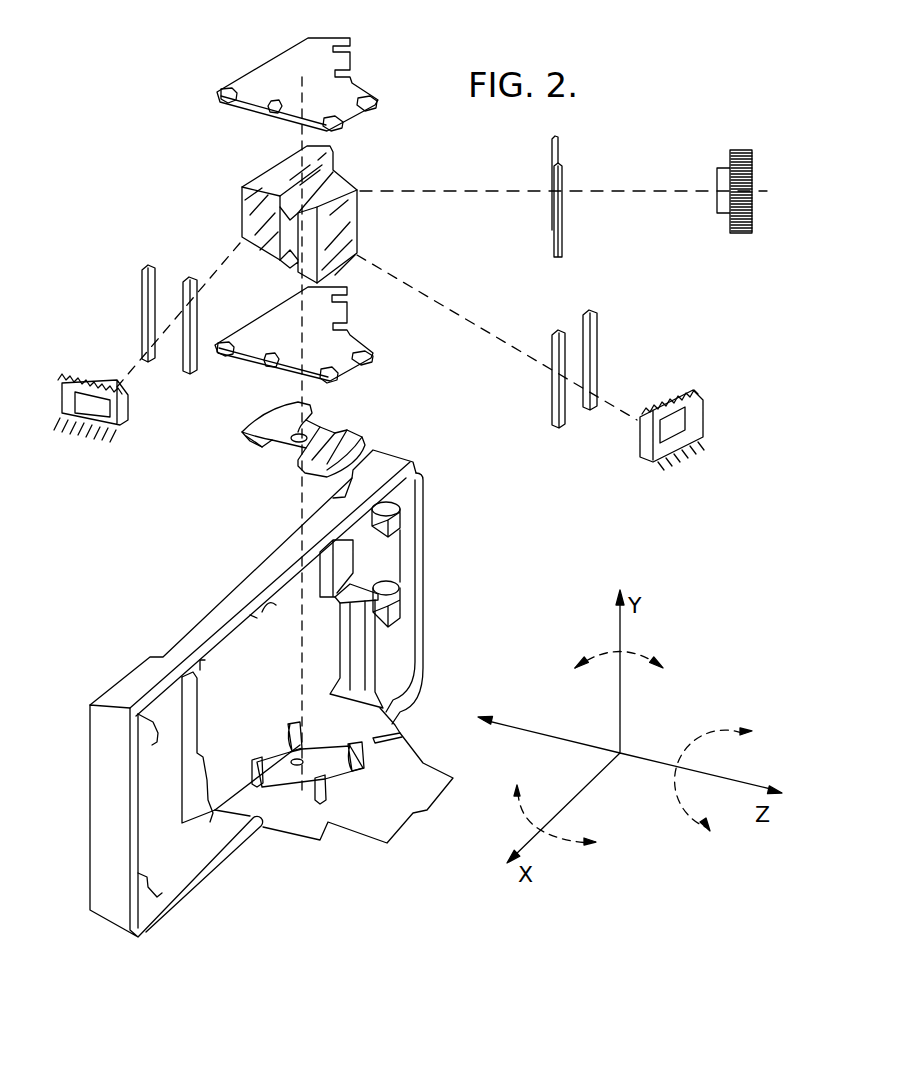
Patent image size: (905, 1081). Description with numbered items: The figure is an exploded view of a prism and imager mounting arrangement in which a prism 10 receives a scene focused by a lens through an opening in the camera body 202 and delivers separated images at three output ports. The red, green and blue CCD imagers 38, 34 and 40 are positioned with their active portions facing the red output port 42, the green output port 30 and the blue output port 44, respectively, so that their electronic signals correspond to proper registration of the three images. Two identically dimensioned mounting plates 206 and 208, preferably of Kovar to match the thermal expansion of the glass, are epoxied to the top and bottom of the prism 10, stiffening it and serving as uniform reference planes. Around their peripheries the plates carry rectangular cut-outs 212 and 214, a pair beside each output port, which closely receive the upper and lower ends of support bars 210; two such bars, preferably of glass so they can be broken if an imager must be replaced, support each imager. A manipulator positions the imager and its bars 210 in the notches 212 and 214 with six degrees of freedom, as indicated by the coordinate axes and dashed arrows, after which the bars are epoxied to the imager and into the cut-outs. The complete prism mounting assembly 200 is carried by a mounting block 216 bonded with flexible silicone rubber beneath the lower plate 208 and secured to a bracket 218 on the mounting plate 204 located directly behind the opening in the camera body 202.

The prism 10 is at (297, 219).
The green output port 30 is at (357, 230).
The green CCD imager 34 is at (647, 440).
The red CCD imager 38 is at (128, 427).
The blue CCD imager 40 is at (720, 213).
The red output port 42 is at (253, 250).
The blue output port 44 is at (327, 173).
The prism mounting assembly 200 is at (185, 244).
The camera body 202 is at (180, 637).
The mounting plate 204 is at (353, 840).
The upper mounting plate 206 is at (268, 62).
The lower mounting plate 208 is at (350, 313).
The support bars 210 is at (142, 302).
The cut-outs 212 is at (273, 110).
The cut-outs 214 is at (270, 368).
The mounting block 216 is at (245, 438).
The bracket 218 is at (360, 757).